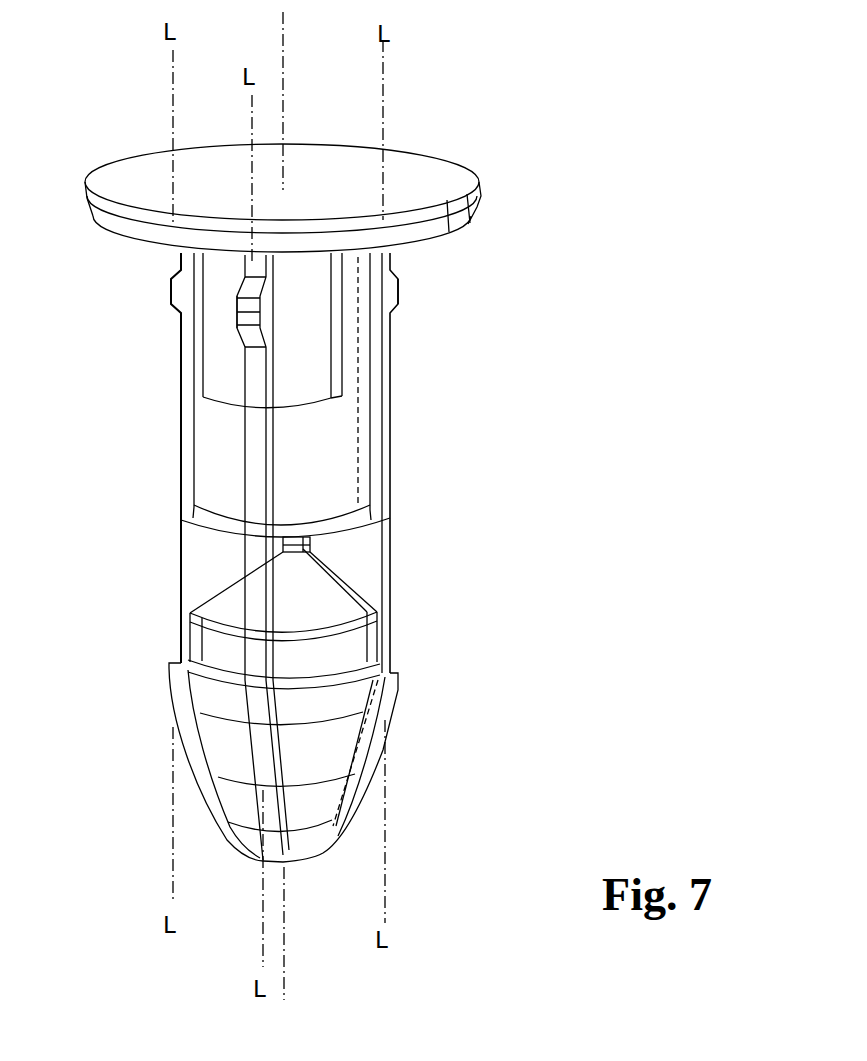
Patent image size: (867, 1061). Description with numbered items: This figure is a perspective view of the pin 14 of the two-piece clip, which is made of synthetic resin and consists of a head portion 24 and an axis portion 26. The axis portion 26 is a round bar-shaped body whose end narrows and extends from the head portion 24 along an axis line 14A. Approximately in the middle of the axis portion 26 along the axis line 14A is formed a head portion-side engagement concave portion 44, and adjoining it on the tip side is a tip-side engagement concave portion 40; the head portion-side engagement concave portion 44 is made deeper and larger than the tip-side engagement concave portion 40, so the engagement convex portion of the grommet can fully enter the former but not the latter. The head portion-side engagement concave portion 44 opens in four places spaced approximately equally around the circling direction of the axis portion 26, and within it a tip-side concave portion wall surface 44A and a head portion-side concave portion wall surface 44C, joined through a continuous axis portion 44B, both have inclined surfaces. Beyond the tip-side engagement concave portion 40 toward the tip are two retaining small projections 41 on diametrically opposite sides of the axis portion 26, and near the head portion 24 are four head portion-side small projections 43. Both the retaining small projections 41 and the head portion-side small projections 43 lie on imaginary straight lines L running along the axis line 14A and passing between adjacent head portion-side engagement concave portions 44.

The pin 14 is at (598, 200).
The axis line 14A is at (283, 110).
The head portion 24 is at (495, 192).
The axis portion 26 is at (438, 372).
The tip-side engagement concave portion 40 is at (196, 641).
The retaining small projections 41 is at (170, 673).
The head portion-side small projections 43 is at (258, 312).
The head portion-side engagement concave portion 44 is at (298, 564).
The tip-side concave portion wall surface 44A is at (222, 597).
The continuous axis portion 44B is at (212, 523).
The head portion-side concave portion wall surface 44C is at (353, 523).